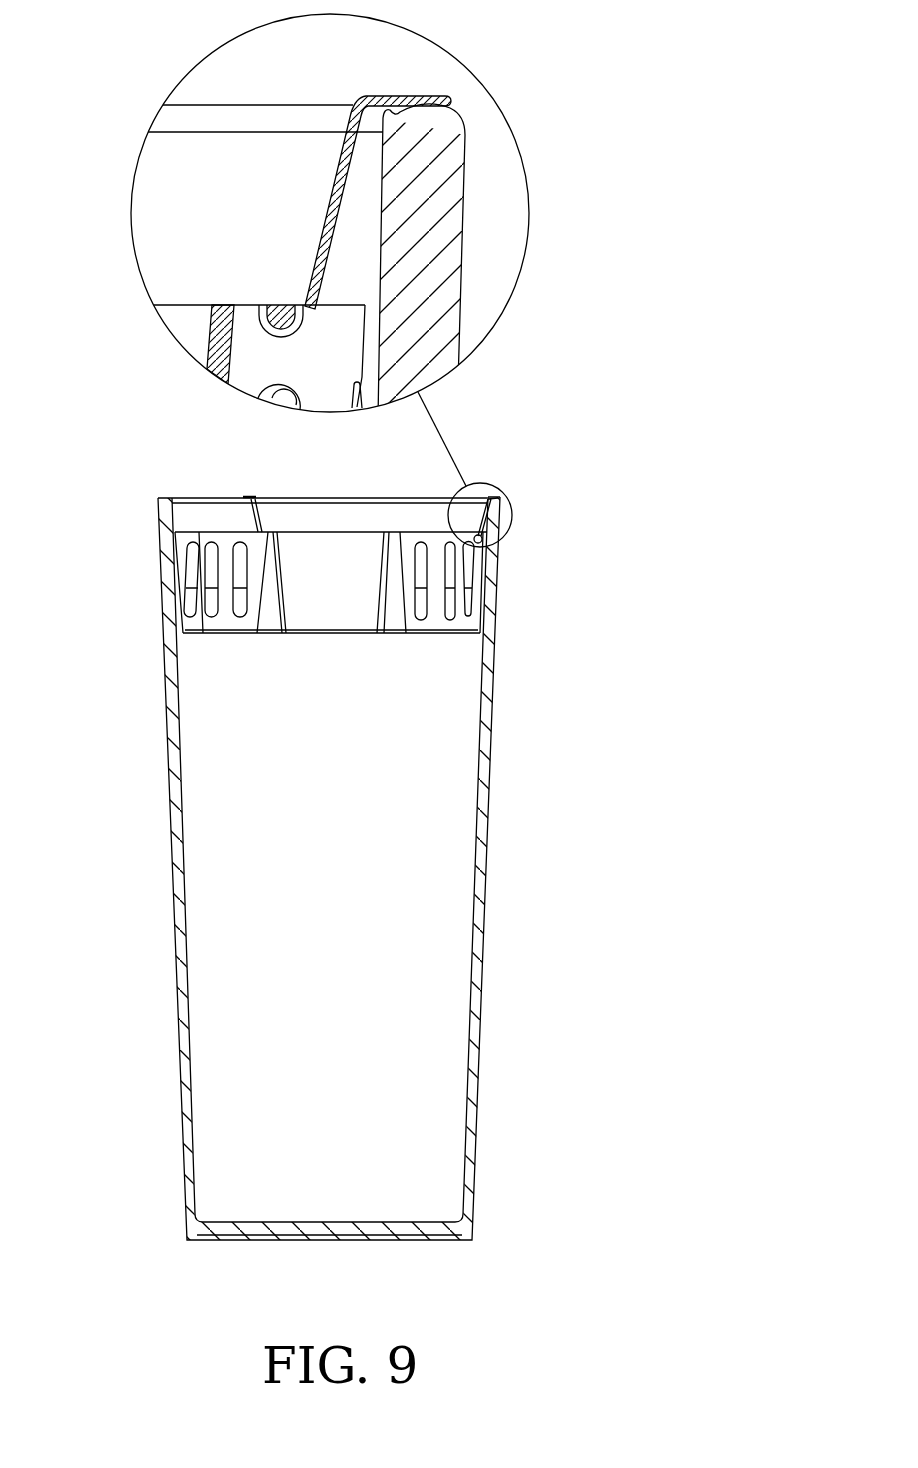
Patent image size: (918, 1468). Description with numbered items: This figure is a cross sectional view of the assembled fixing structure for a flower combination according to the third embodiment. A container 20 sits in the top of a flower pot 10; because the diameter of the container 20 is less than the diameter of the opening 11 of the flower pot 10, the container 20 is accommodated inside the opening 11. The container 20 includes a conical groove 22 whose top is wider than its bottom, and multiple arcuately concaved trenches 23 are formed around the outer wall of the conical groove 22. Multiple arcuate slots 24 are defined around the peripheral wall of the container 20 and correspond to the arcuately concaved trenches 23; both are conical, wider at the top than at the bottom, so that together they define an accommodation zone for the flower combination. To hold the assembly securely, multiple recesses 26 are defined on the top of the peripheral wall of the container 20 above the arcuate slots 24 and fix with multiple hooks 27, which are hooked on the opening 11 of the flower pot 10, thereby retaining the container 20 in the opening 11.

The flower pot 10 is at (537, 1047).
The opening 11 is at (383, 163).
The container 20 is at (555, 605).
The conical groove 22 is at (332, 557).
The arcuately concaved trench 23 is at (398, 552).
The arcuate slot 24 is at (225, 548).
The recess 26 is at (527, 552).
The hook 27 is at (563, 510).